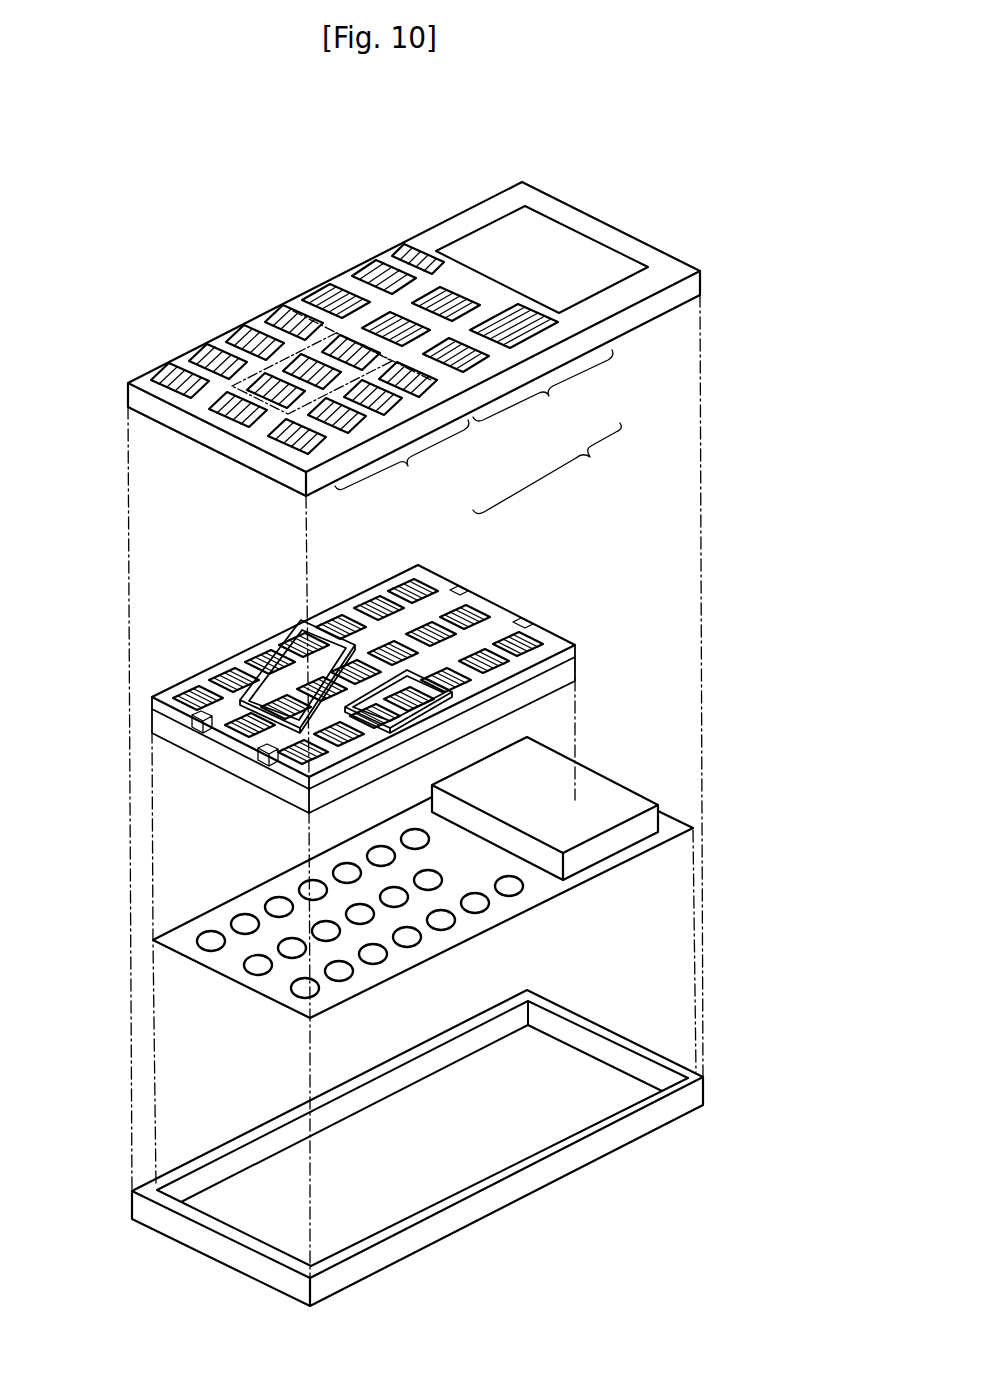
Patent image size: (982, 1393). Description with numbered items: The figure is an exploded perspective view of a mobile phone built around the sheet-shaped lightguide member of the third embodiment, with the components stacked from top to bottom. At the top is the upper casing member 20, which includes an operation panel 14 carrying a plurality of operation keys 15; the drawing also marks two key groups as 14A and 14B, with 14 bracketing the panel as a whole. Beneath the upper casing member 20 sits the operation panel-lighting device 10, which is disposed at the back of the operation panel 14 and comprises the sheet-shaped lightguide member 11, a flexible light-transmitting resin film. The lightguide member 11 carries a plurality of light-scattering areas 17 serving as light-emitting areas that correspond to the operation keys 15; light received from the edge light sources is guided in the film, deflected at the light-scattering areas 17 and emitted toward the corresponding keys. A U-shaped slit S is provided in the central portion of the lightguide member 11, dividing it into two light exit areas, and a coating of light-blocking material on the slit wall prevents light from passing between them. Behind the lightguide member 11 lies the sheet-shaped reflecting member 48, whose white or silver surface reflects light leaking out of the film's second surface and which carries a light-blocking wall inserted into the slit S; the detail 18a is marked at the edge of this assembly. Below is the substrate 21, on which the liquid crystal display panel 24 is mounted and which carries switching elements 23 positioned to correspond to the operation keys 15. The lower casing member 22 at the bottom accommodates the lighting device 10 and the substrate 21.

The upper casing member 20 is at (607, 218).
The operation keys 15 is at (378, 270).
The first key region 14A is at (543, 398).
The second key region 14B is at (402, 468).
The operation panel 14 is at (548, 468).
The light-scattering areas 17 is at (385, 597).
The operation panel-lighting device 10 is at (520, 613).
The sheet-shaped lightguide member 11 is at (560, 631).
The sheet-shaped reflecting member 48 is at (582, 677).
The protrusions 18a is at (243, 725).
The U-shaped slit S is at (400, 705).
The liquid crystal display panel 24 is at (593, 783).
The substrate 21 is at (505, 907).
The switching elements 23 is at (255, 965).
The lower casing member 22 is at (507, 1191).